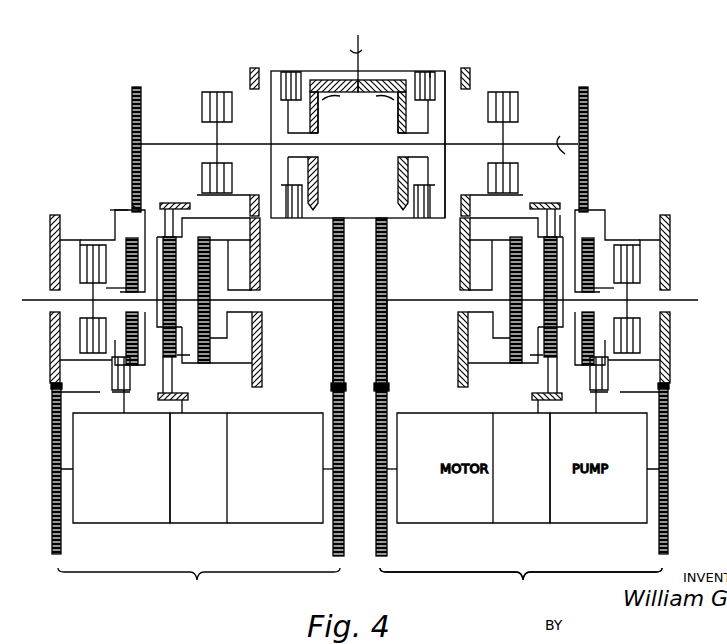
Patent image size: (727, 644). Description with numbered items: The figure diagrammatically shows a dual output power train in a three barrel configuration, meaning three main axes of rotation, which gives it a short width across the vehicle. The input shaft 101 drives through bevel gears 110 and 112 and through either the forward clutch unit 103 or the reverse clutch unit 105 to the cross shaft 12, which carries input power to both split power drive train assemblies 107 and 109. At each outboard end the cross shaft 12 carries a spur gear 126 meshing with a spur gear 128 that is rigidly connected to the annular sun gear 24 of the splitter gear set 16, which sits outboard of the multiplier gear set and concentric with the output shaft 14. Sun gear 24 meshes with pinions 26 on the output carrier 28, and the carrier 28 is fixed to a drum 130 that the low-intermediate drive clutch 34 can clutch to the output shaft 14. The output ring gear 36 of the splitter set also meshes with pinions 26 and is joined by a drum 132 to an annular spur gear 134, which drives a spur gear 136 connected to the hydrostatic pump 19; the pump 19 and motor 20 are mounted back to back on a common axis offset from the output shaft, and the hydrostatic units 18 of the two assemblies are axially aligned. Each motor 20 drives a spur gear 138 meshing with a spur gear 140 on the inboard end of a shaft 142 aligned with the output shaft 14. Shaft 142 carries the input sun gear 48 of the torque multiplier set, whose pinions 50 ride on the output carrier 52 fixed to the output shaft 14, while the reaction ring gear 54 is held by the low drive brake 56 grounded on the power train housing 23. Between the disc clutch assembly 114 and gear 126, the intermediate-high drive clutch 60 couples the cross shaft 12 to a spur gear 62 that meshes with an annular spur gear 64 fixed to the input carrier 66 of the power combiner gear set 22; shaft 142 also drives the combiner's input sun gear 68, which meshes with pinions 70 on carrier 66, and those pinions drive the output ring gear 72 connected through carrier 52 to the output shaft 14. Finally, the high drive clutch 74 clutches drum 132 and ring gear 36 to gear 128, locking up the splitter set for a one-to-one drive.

The cross shaft 12 is at (347, 146).
The output shaft 14 is at (36, 300).
The splitter gear set 16 is at (128, 268).
The hydraulic unit 18 is at (195, 523).
The hydrostatic pump 19 is at (105, 523).
The hydrostatic motor 20 is at (313, 523).
The power combiner gear set 22 is at (233, 283).
The power train housing 23 is at (182, 400).
The sun gear 24 is at (120, 330).
The pinions 26 is at (118, 345).
The output carrier 28 is at (120, 255).
The low-intermediate drive clutch 34 is at (93, 285).
The output ring gear 36 is at (124, 392).
The input sun gear 48 is at (205, 318).
The pinions 50 is at (170, 278).
The output carrier 52 is at (132, 240).
The reaction ring gear 54 is at (176, 222).
The low drive brake 56 is at (190, 396).
The intermediate-high drive clutch 60 is at (202, 104).
The spur gear 62 is at (250, 74).
The annular spur gear 64 is at (260, 240).
The input carrier 66 is at (210, 345).
The input sun gear 68 is at (245, 295).
The pinions 70 is at (212, 324).
The output ring gear 72 is at (212, 242).
The high drive clutch 74 is at (110, 212).
The input shaft 101 is at (360, 50).
The forward clutch unit 103 is at (446, 72).
The reverse clutch unit 105 is at (291, 76).
The split power drive train assembly 107 is at (521, 574).
The split power drive train assembly 109 is at (197, 580).
The bevel gear 110 is at (366, 80).
The bevel gear 112 is at (398, 98).
The disc clutch assembly 114 is at (282, 92).
The spur gear 126 is at (131, 118).
The spur gear 128 is at (138, 210).
The drum 130 is at (78, 243).
The drum 132 is at (110, 393).
The annular spur gear 134 is at (55, 365).
The spur gear 136 is at (52, 420).
The spur gear 138 is at (340, 560).
The spur gear 140 is at (333, 370).
The shaft 142 is at (300, 302).